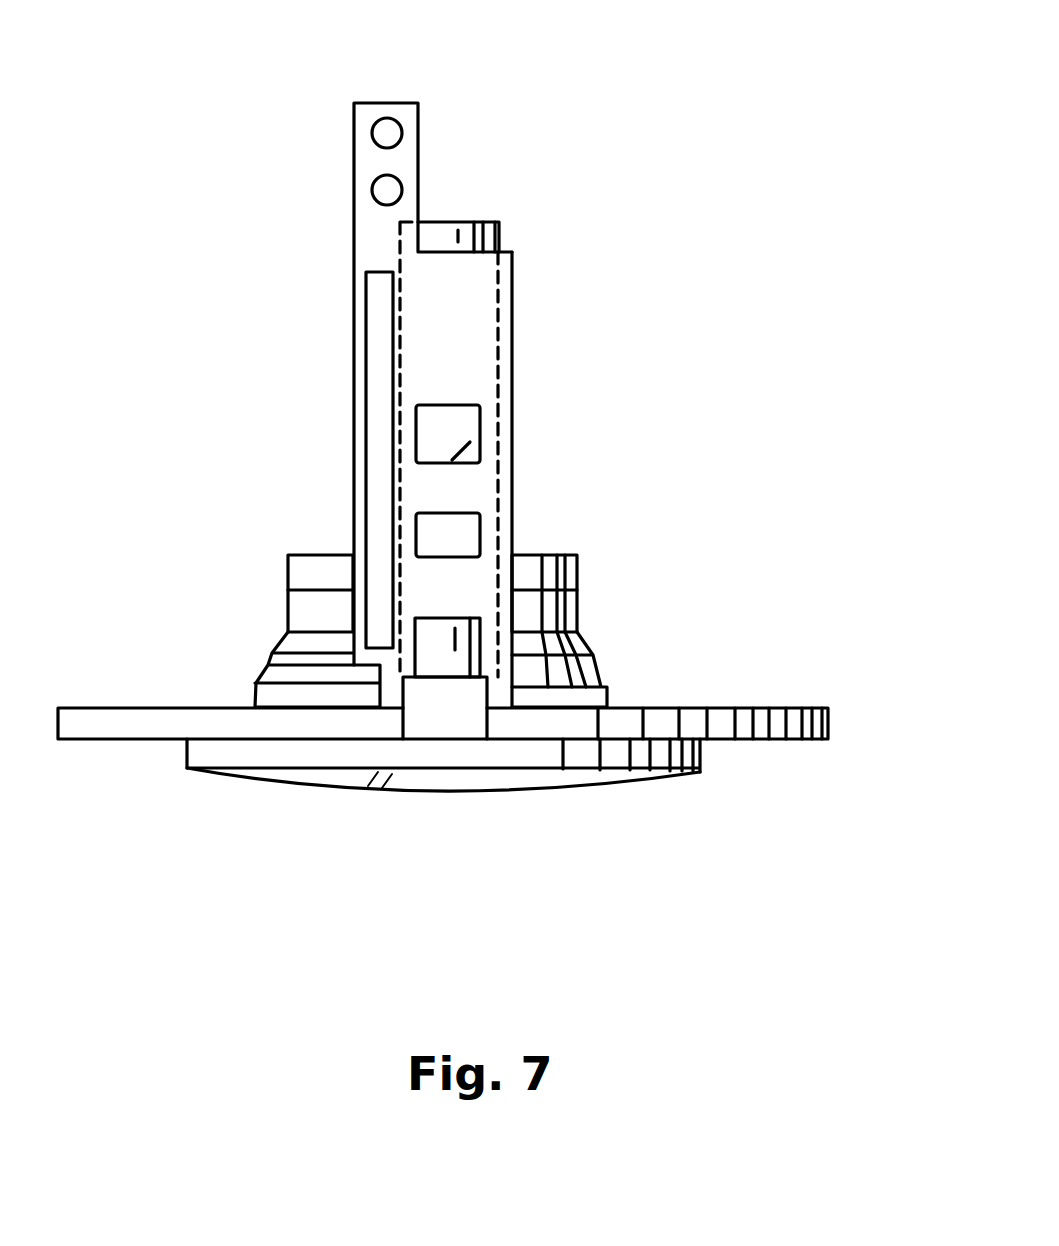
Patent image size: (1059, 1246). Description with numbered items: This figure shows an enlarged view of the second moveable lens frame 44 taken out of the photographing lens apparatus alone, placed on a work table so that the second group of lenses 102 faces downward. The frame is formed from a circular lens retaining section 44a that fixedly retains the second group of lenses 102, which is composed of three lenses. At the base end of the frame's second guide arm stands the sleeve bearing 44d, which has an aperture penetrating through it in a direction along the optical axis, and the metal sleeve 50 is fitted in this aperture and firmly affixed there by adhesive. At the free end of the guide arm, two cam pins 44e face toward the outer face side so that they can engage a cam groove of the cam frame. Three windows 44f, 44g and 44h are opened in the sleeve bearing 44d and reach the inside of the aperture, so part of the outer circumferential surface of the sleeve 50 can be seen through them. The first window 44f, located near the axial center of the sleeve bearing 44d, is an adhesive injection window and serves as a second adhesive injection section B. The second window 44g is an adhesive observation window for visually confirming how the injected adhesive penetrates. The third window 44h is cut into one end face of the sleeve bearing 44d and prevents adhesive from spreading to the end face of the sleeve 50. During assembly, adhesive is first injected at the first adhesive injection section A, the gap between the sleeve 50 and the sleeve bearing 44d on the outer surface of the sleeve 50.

The second moveable lens frame 44 is at (537, 130).
The lens retaining section 44a is at (758, 708).
The sleeve bearing 44d is at (467, 333).
The cam pins 44e is at (377, 180).
The first window 44f is at (433, 427).
The second window 44g is at (433, 535).
The third window 44h is at (425, 617).
The sleeve 50 is at (466, 222).
The second group of lenses 102 is at (613, 753).
The first adhesive injection section A is at (515, 249).
The second adhesive injection section B is at (452, 460).